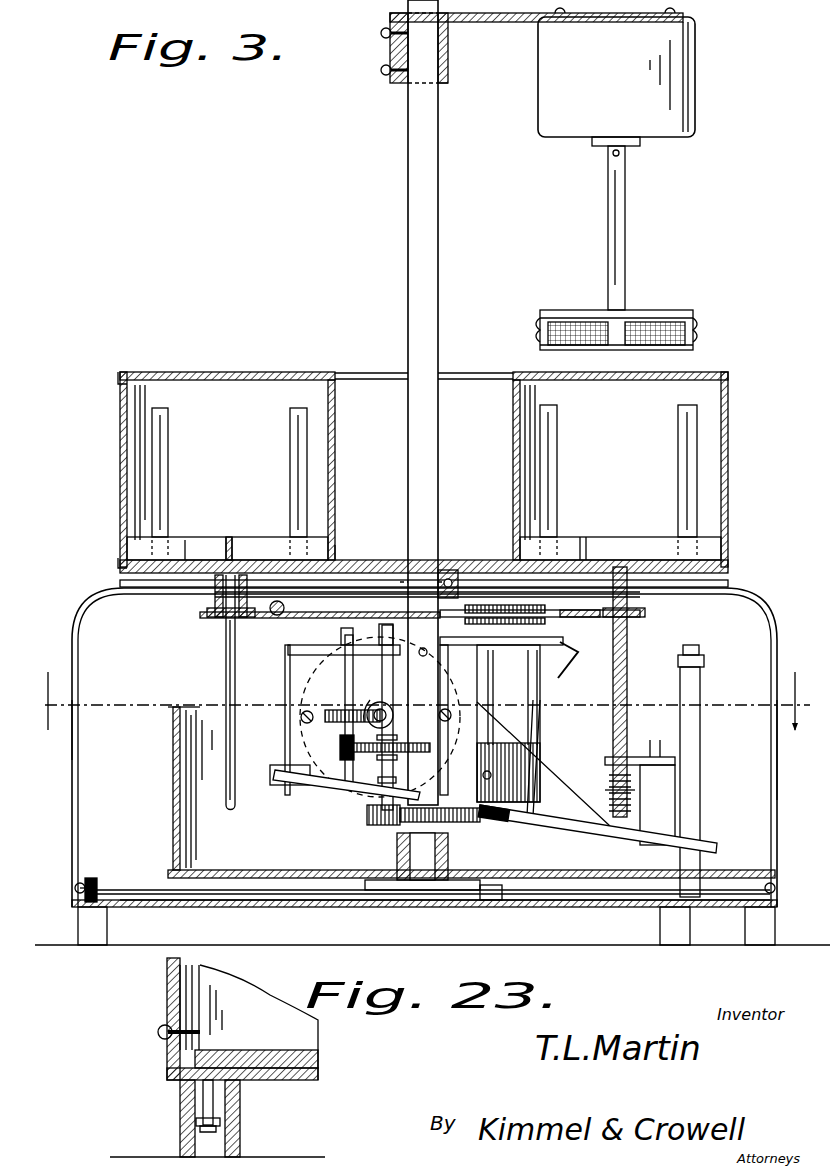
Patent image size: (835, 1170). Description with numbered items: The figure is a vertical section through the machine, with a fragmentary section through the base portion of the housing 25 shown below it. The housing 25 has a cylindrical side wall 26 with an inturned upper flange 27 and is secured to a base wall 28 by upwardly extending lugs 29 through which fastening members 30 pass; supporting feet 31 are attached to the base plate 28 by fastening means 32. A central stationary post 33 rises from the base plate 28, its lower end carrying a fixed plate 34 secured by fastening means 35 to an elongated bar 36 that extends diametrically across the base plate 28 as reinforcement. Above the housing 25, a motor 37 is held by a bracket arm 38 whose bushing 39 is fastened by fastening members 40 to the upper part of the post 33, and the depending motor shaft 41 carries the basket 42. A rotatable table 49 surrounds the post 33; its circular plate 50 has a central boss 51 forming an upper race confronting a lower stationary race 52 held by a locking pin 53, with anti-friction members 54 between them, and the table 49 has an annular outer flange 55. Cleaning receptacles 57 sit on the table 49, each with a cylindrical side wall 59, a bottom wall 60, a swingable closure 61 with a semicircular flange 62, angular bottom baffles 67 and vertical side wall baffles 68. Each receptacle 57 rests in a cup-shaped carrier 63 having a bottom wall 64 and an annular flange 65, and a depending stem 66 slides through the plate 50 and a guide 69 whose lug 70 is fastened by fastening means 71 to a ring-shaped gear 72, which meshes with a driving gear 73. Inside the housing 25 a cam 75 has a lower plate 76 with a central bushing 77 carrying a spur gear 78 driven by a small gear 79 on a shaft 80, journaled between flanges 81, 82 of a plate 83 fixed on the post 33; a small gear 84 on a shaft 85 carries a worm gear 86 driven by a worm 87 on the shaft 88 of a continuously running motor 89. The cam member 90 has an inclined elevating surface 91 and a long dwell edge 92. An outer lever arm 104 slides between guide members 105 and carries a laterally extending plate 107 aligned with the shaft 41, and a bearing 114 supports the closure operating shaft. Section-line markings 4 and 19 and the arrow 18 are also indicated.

In FIG. 3, the post 33 is at (432, 262).
In FIG. 3, the bracket arm 38 is at (509, 23).
In FIG. 3, the bushing 39 is at (450, 73).
In FIG. 3, the fastening members 40 is at (383, 73).
In FIG. 3, the motor 37 is at (700, 98).
In FIG. 3, the motor shaft 41 is at (628, 209).
In FIG. 3, the basket 42 is at (668, 312).
In FIG. 3, the swingable closure 61 is at (196, 372).
In FIG. 3, the semicircular flange 62 is at (120, 378).
In FIG. 3, the cylindrical side wall 59 is at (338, 416).
In FIG. 3, the cleaning receptacle 57 is at (338, 452).
In FIG. 3, the side wall baffles 68 is at (290, 425).
In FIG. 3, the bottom wall 64 is at (257, 560).
In FIG. 3, the bottom baffles 67 is at (216, 540).
In FIG. 3, the bottom wall 60 is at (188, 548).
In FIG. 3, the cup-shaped carrier 63 is at (117, 562).
In FIG. 3, the annular flange 65 is at (342, 553).
In FIG. 3, the table 49 is at (732, 562).
In FIG. 3, the annular outer flange 55 is at (730, 581).
In FIG. 3, the circular plate 50 is at (363, 580).
In FIG. 3, the central boss 51 is at (368, 596).
In FIG. 3, the anti-friction members 54 is at (432, 535).
In FIG. 3, the locking pin 53 is at (452, 575).
In FIG. 3, the driving gear 73 is at (483, 604).
In FIG. 3, the inturned upper flange 27 is at (102, 600).
In FIG. 3, the cylindrical side wall 26 is at (72, 746).
In FIG. 3, the housing 25 is at (778, 810).
In FIG. 3, the section line 4- 4 is at (425, 688).
In FIG. 3, the guide 69 is at (215, 600).
In FIG. 3, the depending stem 66 is at (225, 650).
In FIG. 3, the ring-shaped gear 72 is at (285, 609).
In FIG. 3, the lower stationary race 52 is at (400, 596).
In FIG. 3, the flange 81 is at (330, 650).
In FIG. 3, the hook 18 is at (566, 647).
In FIG. 3, the lug 70 is at (351, 714).
In FIG. 3, the fastening means 71 is at (299, 710).
In FIG. 3, the plate 83 is at (290, 690).
In FIG. 3, the motor 89 is at (373, 739).
In FIG. 3, the shaft 85 is at (346, 692).
In FIG. 3, the driving worm 87 is at (366, 700).
In FIG. 3, the motor shaft 88 is at (395, 717).
In FIG. 3, the worm gear 86 is at (301, 717).
In FIG. 3, the small gear 84 is at (340, 745).
In FIG. 3, the shaft 80 is at (400, 690).
In FIG. 3, the flange 82 is at (292, 786).
In FIG. 3, the small gear 79 is at (368, 820).
In FIG. 3, the spur gear 78 is at (460, 825).
In FIG. 3, the central bushing 77 is at (397, 850).
In FIG. 3, the lower plate 76 is at (238, 870).
In FIG. 3, the cam member 90 is at (173, 732).
In FIG. 3, the cam 75 is at (172, 791).
In FIG. 3, the dwell edge 92 is at (195, 707).
In FIG. 3, the base wall 28 is at (170, 905).
In FIG. 23, the base wall 28 is at (308, 1080).
In FIG. 3, the elongated bar 36 is at (265, 900).
In FIG. 3, the supporting feet 31 is at (80, 925).
In FIG. 23, the supporting feet 31 is at (240, 1133).
In FIG. 3, the lugs 29 is at (95, 878).
In FIG. 23, the lugs 29 is at (167, 1010).
In FIG. 3, the fastening members 30 is at (74, 883).
In FIG. 23, the fastening members 30 is at (158, 1032).
In FIG. 3, the fastening means 35 is at (365, 908).
In FIG. 3, the fixed plate 34 is at (484, 900).
In FIG. 3, the laterally extending plate 107 is at (540, 814).
In FIG. 3, the elevating surface 91 is at (532, 760).
In FIG. 3, the bearing 114 is at (640, 742).
In FIG. 3, the guide members 105 is at (702, 751).
In FIG. 3, the threaded rod 19 is at (635, 789).
In FIG. 3, the outer arm 104 is at (705, 848).
In FIG. 23, the fastening means 32 is at (205, 1100).